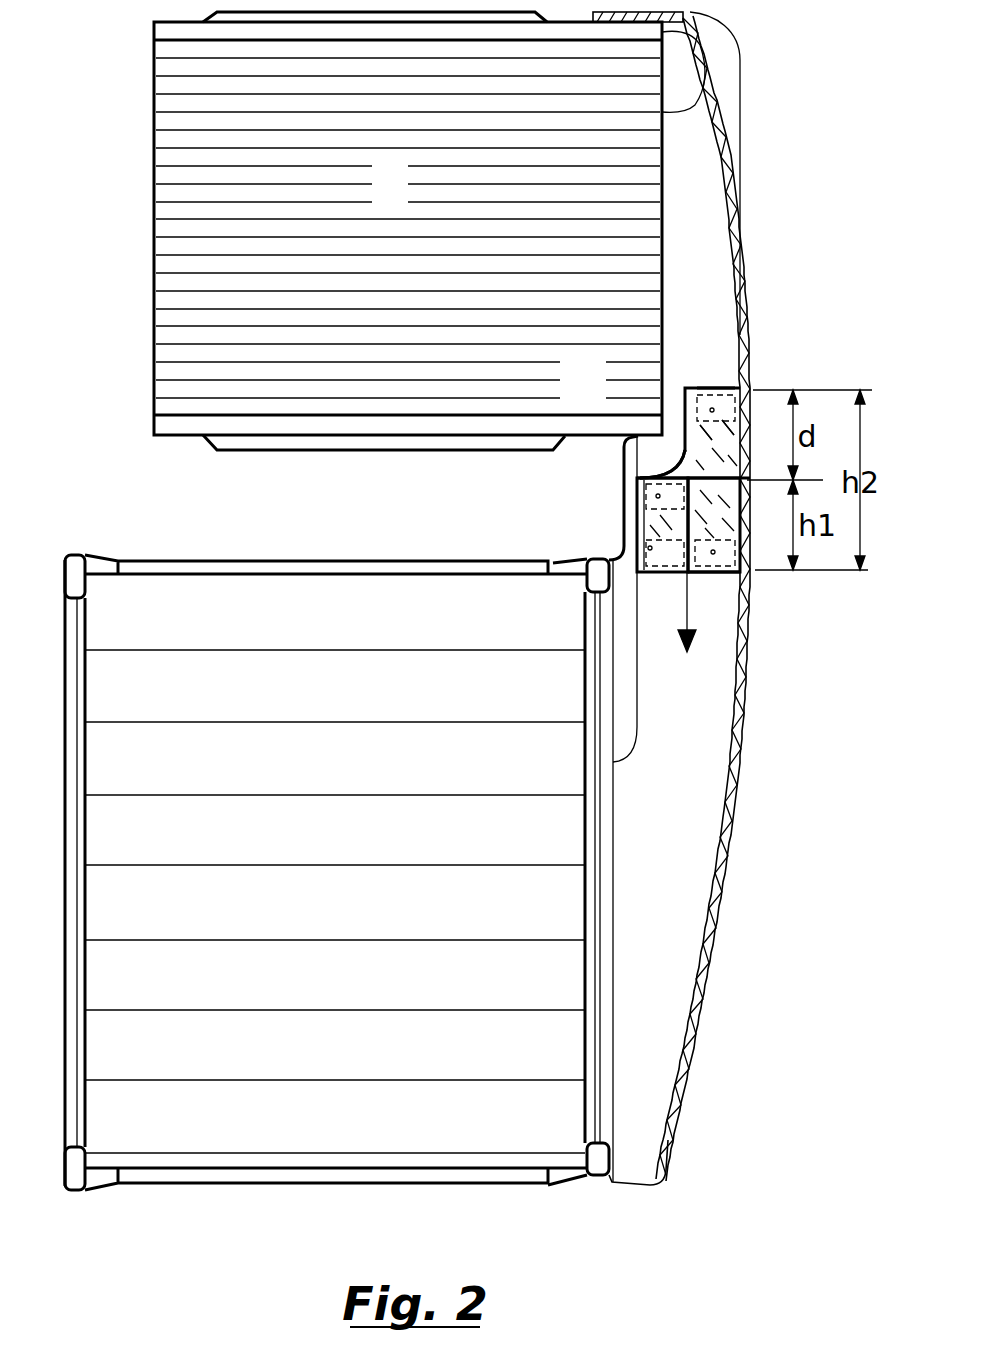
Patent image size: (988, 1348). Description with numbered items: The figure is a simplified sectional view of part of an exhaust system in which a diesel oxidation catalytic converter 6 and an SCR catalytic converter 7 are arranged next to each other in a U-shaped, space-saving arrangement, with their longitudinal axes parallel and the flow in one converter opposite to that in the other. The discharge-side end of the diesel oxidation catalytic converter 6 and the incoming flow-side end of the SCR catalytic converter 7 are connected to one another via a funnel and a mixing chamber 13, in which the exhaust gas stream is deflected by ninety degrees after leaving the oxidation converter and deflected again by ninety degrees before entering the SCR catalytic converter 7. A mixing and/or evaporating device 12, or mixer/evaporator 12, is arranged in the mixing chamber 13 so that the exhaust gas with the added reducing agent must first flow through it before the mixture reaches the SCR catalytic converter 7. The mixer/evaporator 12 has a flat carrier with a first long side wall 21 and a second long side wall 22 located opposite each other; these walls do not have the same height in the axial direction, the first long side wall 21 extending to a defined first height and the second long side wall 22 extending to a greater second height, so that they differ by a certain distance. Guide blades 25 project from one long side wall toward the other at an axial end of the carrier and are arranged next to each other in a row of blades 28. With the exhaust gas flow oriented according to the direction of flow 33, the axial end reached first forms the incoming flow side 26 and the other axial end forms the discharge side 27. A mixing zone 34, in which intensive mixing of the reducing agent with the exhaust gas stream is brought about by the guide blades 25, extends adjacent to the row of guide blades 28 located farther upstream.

The diesel oxidation catalytic converter 6 is at (399, 201).
The SCR catalytic converter 7 is at (328, 850).
The mixing and/or evaporating device 12 is at (677, 461).
The mixing chamber 13 is at (645, 973).
The first long side wall 21 is at (618, 560).
The second long side wall 22 is at (772, 530).
The guide blades 25 is at (715, 408).
The incoming flow side 26 is at (704, 387).
The discharge side 27 is at (700, 575).
The row of blades 28 is at (712, 388).
The direction of flow 33 is at (685, 634).
The mixing zone 34 is at (720, 452).